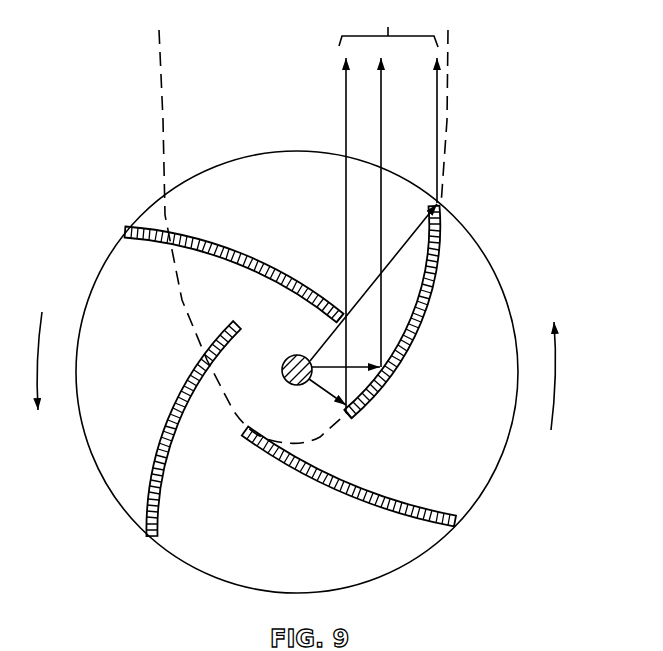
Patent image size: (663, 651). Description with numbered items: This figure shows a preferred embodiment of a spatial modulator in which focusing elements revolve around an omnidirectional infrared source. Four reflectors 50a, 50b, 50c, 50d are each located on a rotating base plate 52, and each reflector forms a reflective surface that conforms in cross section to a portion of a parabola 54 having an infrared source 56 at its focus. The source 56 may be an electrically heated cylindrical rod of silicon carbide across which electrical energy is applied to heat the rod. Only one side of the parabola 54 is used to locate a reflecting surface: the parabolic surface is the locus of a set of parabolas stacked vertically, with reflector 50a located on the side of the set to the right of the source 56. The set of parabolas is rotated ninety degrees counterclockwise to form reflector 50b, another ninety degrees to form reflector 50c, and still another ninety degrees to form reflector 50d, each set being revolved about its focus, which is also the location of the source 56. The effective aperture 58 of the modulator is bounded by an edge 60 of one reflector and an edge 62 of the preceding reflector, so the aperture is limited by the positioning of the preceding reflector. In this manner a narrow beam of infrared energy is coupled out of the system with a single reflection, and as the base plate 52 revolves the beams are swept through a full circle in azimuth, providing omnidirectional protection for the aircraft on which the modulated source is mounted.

The reflector 50a is at (430, 297).
The reflector 50b is at (228, 238).
The reflector 50c is at (166, 447).
The reflector 50d is at (390, 500).
The rotating base plate 52 is at (478, 224).
The parabola 54 is at (450, 98).
The infrared source 56 is at (286, 360).
The effective aperture 58 is at (360, 207).
The edge 60 is at (352, 414).
The edge 62 is at (342, 310).